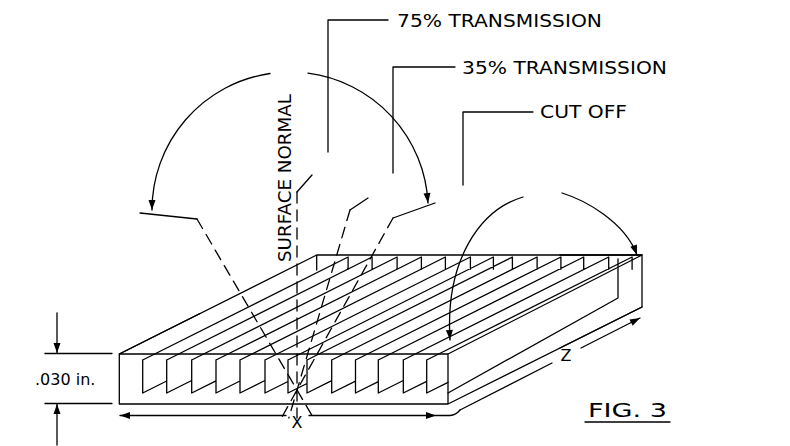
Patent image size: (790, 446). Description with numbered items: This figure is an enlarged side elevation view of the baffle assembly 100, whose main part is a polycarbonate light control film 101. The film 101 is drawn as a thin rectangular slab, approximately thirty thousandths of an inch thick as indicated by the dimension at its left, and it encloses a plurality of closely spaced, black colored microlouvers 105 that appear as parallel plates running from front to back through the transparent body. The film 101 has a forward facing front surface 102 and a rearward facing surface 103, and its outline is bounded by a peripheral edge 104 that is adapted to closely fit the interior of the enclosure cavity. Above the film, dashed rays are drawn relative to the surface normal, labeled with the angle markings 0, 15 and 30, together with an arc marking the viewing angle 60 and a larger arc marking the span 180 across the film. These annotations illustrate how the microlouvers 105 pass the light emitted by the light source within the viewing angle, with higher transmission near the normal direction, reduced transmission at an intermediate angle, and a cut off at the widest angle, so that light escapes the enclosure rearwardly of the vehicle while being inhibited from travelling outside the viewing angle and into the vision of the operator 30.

The baffle assembly 100 is at (605, 195).
The light control film 101 is at (640, 280).
The front surface 102 is at (642, 255).
The rearward facing surface 103 is at (603, 326).
The peripheral edge 104 is at (160, 333).
The microlouvers 105 is at (237, 333).
The 180 degree angular span 180 is at (541, 263).
The 60 degree viewing angle 60 is at (285, 240).
The 0 degree ray (surface normal) 0 is at (312, 285).
The 15 degree ray 15 is at (344, 297).
The operator 30 is at (374, 302).